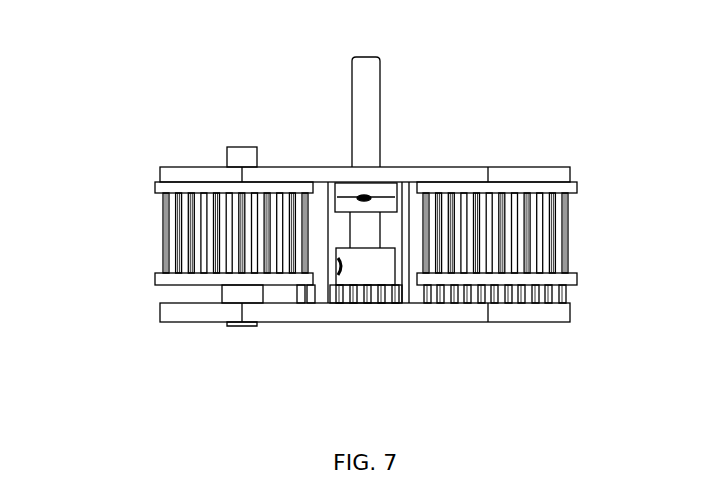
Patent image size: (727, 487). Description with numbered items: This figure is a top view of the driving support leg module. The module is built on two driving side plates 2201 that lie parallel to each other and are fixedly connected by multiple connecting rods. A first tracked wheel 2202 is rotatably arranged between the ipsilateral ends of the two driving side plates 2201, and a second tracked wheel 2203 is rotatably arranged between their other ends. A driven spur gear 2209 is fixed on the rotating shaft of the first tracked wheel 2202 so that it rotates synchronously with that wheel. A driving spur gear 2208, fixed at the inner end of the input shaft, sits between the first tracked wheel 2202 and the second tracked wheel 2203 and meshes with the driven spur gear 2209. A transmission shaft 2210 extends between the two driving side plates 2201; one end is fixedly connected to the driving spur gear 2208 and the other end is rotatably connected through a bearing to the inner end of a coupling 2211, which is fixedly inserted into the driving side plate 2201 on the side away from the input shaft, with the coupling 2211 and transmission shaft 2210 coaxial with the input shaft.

The driving side plate 2201 is at (488, 167).
The first tracked wheel 2202 is at (543, 222).
The second tracked wheel 2203 is at (177, 247).
The driving spur gear 2208 is at (365, 297).
The driven spur gear 2209 is at (545, 290).
The transmission shaft 2210 is at (351, 213).
The coupling 2211 is at (366, 105).